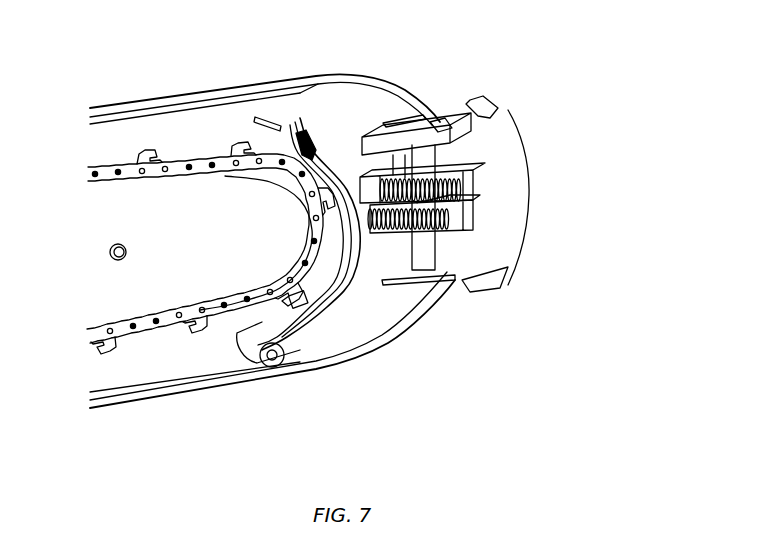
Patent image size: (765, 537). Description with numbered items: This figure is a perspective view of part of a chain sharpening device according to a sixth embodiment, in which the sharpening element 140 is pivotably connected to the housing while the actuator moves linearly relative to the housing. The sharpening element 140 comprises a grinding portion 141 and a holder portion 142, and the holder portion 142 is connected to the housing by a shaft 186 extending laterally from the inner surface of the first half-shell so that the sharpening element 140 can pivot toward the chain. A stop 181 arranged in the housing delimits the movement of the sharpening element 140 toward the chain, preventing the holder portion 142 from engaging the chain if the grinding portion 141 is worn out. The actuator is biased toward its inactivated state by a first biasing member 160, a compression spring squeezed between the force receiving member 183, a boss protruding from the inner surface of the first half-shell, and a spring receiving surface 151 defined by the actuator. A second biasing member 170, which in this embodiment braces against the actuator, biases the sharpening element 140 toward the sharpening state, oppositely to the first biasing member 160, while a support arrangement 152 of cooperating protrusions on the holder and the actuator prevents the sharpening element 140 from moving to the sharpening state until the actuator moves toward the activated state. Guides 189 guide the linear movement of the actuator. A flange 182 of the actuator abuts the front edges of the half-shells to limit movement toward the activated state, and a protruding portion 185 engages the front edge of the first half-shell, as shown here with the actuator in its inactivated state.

The sharpening element 140 is at (325, 345).
The grinding portion 141 is at (305, 270).
The holder portion 142 is at (270, 330).
The spring receiving surface 151 is at (467, 180).
The support arrangement 152 is at (366, 104).
The first biasing member 160 is at (458, 165).
The second biasing member 170 is at (453, 222).
The stop 181 is at (272, 92).
The flange 182 is at (488, 108).
The force receiving member 183 is at (300, 136).
The protruding portion 185 is at (440, 127).
The shaft 186 is at (272, 360).
The guides 189 is at (402, 127).